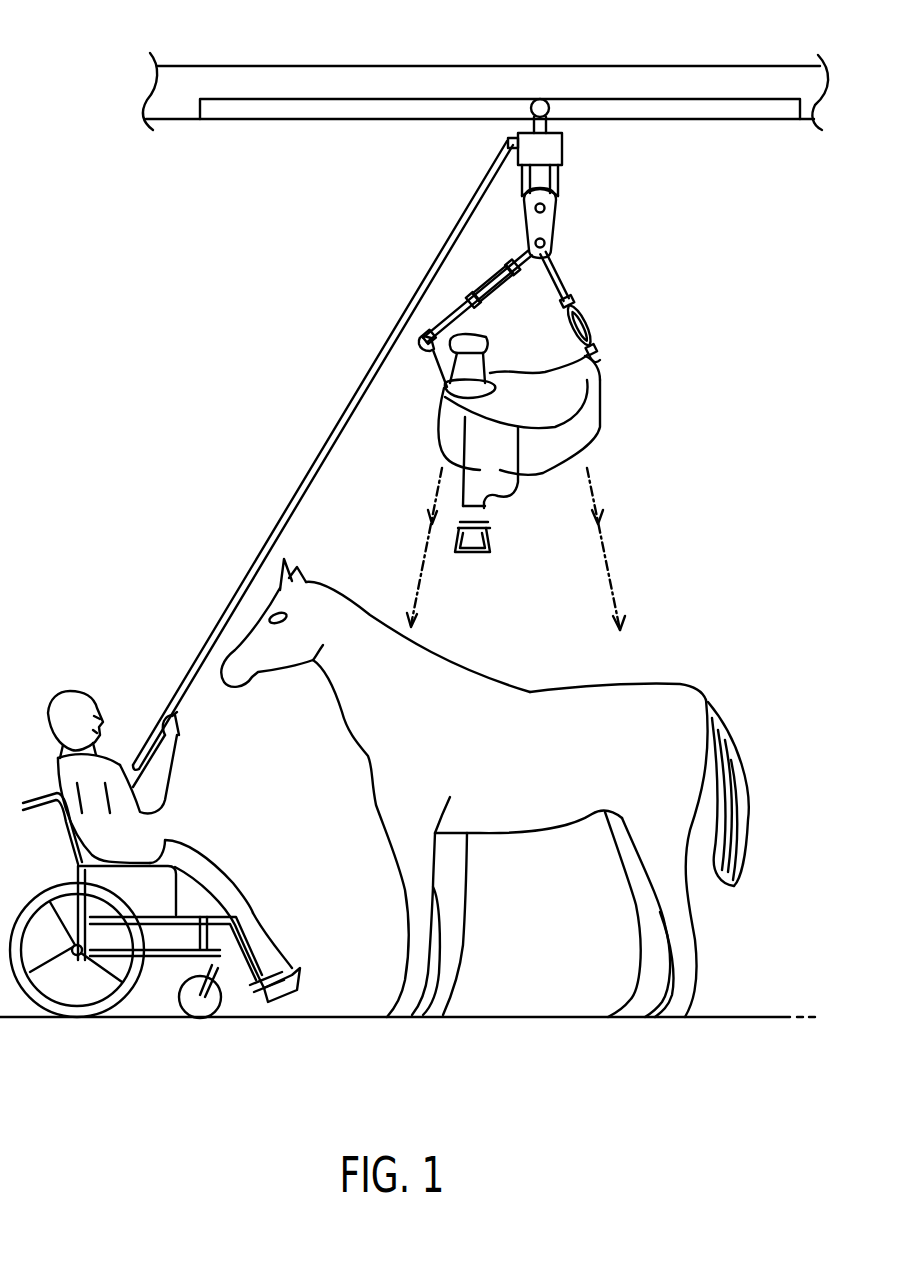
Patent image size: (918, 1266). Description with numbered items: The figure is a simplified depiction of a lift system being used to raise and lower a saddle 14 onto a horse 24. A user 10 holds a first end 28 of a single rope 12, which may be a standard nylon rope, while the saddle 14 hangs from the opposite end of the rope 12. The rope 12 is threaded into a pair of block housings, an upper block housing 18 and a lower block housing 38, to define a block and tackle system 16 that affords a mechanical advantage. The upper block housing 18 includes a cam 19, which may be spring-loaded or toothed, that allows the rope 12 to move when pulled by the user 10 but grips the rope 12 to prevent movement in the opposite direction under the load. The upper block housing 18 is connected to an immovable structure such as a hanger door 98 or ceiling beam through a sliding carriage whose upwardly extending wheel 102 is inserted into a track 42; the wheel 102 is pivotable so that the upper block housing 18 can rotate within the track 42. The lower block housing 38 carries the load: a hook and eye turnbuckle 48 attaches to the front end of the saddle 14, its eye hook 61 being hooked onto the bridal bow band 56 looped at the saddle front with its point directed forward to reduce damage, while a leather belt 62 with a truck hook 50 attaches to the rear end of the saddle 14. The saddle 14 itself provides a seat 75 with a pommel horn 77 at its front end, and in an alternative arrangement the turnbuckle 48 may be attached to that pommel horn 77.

The user 10 is at (52, 703).
The rope 12 is at (284, 512).
The saddle 14 is at (597, 431).
The block and tackle system 16 is at (572, 178).
The upper block housing 18 is at (549, 151).
The cam 19 is at (508, 143).
The horse 24 is at (690, 700).
The first end 28 is at (162, 720).
The lower block housing 38 is at (549, 223).
The track 42 is at (765, 111).
The hook and eye turnbuckle 48 is at (498, 281).
The truck hook 50 is at (600, 358).
The bridal bow band 56 is at (440, 376).
The eye hook 61 is at (418, 344).
The leather belt 62 is at (568, 281).
The seat 75 is at (535, 387).
The pommel horn 77 is at (466, 341).
The hanger door 98 is at (748, 76).
The wheel 102 is at (546, 101).